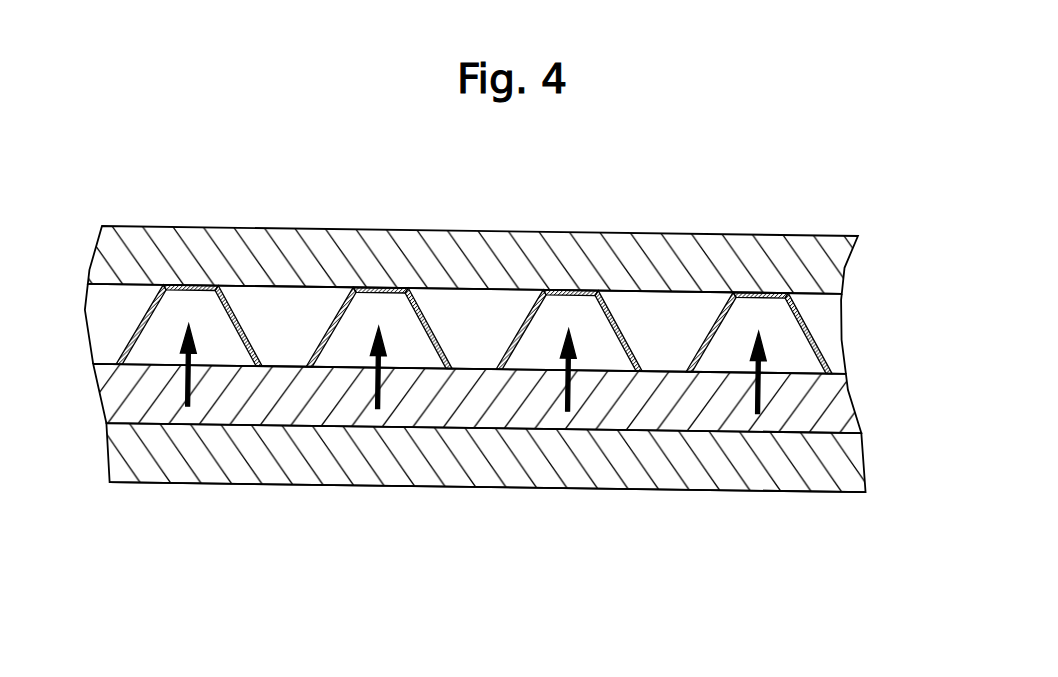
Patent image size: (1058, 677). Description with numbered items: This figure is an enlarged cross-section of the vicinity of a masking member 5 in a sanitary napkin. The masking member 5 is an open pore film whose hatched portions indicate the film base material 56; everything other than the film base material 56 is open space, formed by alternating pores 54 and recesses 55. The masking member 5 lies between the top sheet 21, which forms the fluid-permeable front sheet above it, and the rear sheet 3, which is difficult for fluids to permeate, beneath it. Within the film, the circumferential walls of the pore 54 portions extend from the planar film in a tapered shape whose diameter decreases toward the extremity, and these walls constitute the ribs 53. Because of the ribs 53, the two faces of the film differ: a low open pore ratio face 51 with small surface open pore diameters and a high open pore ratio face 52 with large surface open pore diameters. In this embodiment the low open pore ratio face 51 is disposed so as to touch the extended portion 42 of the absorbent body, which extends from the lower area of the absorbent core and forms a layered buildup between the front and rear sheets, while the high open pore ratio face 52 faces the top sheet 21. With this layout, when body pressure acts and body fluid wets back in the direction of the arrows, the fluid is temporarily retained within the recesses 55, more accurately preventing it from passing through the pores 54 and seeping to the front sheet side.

The rear sheet 3 is at (850, 468).
The masking member 5 is at (835, 318).
The top sheet 21 is at (832, 232).
The extended portion 42 is at (857, 393).
The low open pore ratio face 51 is at (848, 355).
The high open pore ratio face 52 is at (380, 278).
The ribs 53 is at (248, 331).
The pores 54 is at (313, 299).
The recesses 55 is at (400, 349).
The film base material 56 is at (297, 369).